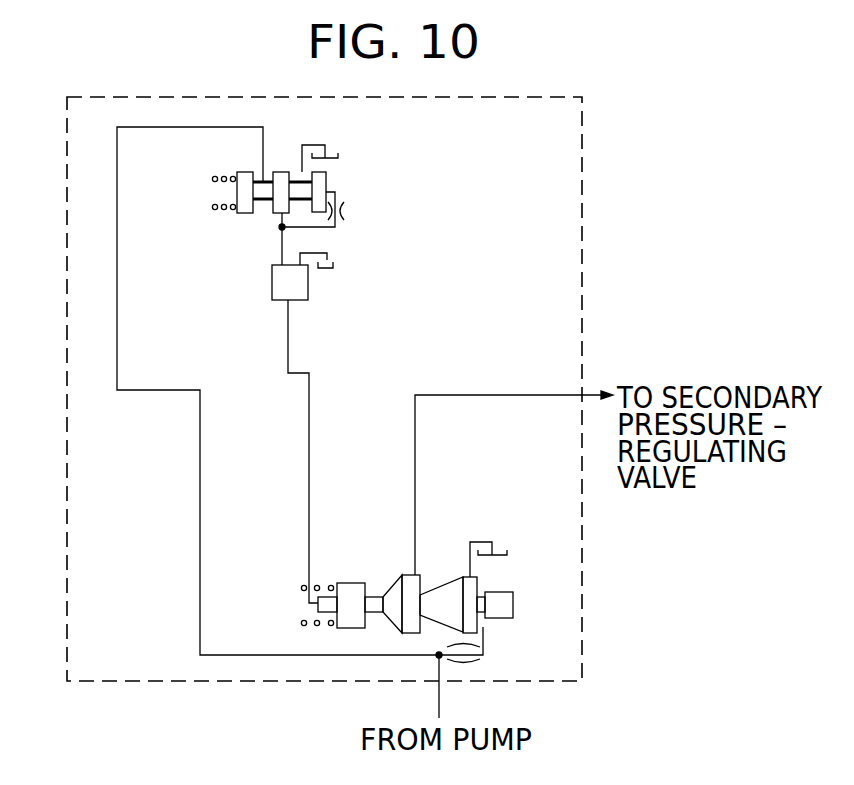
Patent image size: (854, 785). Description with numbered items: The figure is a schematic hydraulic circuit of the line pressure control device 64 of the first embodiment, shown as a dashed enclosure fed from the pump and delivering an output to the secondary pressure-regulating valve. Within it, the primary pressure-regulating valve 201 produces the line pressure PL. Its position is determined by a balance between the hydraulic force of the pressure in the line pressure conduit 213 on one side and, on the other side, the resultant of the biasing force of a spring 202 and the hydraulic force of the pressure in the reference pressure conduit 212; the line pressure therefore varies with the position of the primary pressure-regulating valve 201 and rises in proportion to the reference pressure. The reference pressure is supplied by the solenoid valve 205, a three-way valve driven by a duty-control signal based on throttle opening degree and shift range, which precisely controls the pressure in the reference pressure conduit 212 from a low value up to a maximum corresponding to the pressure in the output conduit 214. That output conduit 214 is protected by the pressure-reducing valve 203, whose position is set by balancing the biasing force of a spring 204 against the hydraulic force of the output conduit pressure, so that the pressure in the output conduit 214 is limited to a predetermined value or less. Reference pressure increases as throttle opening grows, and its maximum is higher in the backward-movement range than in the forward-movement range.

The line pressure control device 64 is at (67, 558).
The primary pressure-regulating valve 201 is at (513, 600).
The spring 202 is at (303, 588).
The pressure-reducing valve 203 is at (330, 178).
The spring 204 is at (220, 212).
The solenoid valve 205 is at (272, 284).
The reference pressure conduit 212 is at (309, 543).
The line pressure conduit 213 is at (201, 620).
The output conduit 214 is at (281, 246).